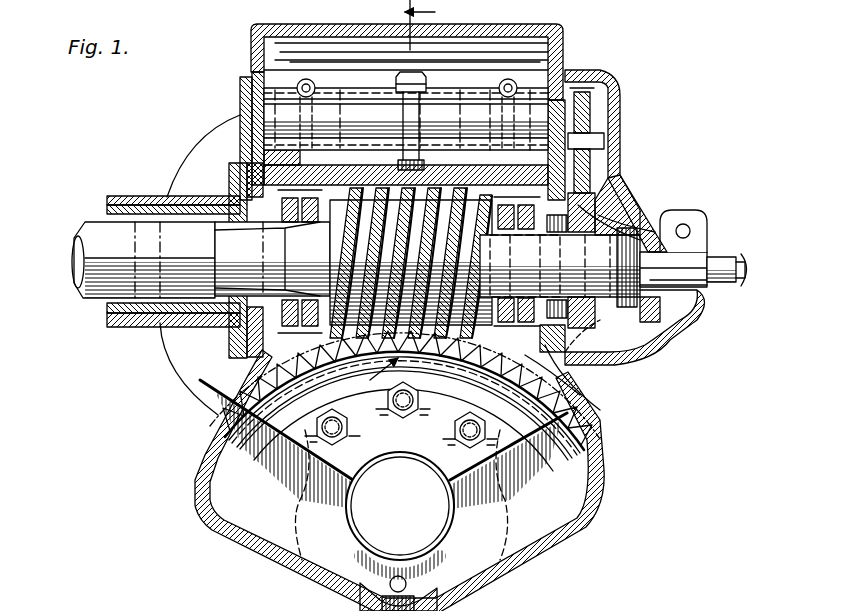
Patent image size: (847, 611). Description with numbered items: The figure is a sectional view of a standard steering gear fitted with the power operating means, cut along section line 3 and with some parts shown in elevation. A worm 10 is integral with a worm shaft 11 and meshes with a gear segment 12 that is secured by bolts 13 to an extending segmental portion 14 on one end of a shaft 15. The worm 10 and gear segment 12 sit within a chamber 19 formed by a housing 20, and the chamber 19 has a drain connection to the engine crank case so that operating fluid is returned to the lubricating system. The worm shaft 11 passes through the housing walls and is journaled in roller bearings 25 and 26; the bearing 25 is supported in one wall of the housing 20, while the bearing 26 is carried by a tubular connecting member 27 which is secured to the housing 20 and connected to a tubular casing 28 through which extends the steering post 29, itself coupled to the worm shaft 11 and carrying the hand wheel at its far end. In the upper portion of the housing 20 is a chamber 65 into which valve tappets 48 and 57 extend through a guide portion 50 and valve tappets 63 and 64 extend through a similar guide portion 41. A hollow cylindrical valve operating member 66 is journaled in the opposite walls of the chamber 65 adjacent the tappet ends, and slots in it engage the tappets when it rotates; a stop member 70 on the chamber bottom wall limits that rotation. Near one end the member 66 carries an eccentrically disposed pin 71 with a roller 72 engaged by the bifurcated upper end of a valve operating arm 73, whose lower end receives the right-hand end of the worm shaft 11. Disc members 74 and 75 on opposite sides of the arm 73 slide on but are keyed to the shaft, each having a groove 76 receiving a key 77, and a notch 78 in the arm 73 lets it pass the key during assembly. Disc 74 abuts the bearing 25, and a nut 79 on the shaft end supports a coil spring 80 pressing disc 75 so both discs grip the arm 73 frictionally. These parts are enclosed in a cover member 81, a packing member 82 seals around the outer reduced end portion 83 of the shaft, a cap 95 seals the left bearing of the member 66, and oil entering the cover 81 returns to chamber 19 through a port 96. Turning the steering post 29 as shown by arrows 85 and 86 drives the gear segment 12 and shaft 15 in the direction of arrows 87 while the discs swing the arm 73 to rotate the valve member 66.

The section line 3 is at (426, 25).
The worm 10 is at (360, 240).
The worm shaft 11 is at (232, 251).
The gear segment 12 is at (275, 440).
The bolts 13 is at (455, 428).
The extending segmental portion 14 is at (457, 478).
The shaft 15 is at (430, 515).
The chamber 19 is at (215, 505).
The housing 20 is at (230, 393).
The roller bearing 25 is at (560, 267).
The roller bearing 26 is at (232, 336).
The tubular connecting member 27 is at (210, 195).
The tubular casing 28 is at (105, 305).
The steering post 29 is at (97, 240).
The guide portion 41 is at (553, 95).
The valve tappet 48 is at (310, 150).
The guide portion 50 is at (265, 38).
The valve tappet 57 is at (315, 90).
The valve tappet 63 is at (499, 90).
The valve tappet 64 is at (500, 150).
The chamber 65 is at (430, 75).
The valve operating member 66 is at (450, 117).
The stop member 70 is at (420, 100).
The eccentrically disposed pin 71 is at (600, 146).
The roller 72 is at (590, 130).
The valve operating arm 73 is at (585, 188).
The disc member 74 is at (600, 207).
The disc member 75 is at (640, 214).
The groove 76 is at (556, 330).
The key 77 is at (632, 340).
The notch 78 is at (650, 226).
The nut 79 is at (655, 316).
The coil spring 80 is at (600, 352).
The cover member 81 is at (600, 95).
The packing member 82 is at (690, 255).
The outer reduced end portion 83 is at (715, 272).
The arrow 85 is at (748, 268).
The arrow 86 is at (380, 598).
The arrows 87 is at (410, 480).
The cap 95 is at (245, 92).
The port 96 is at (545, 366).